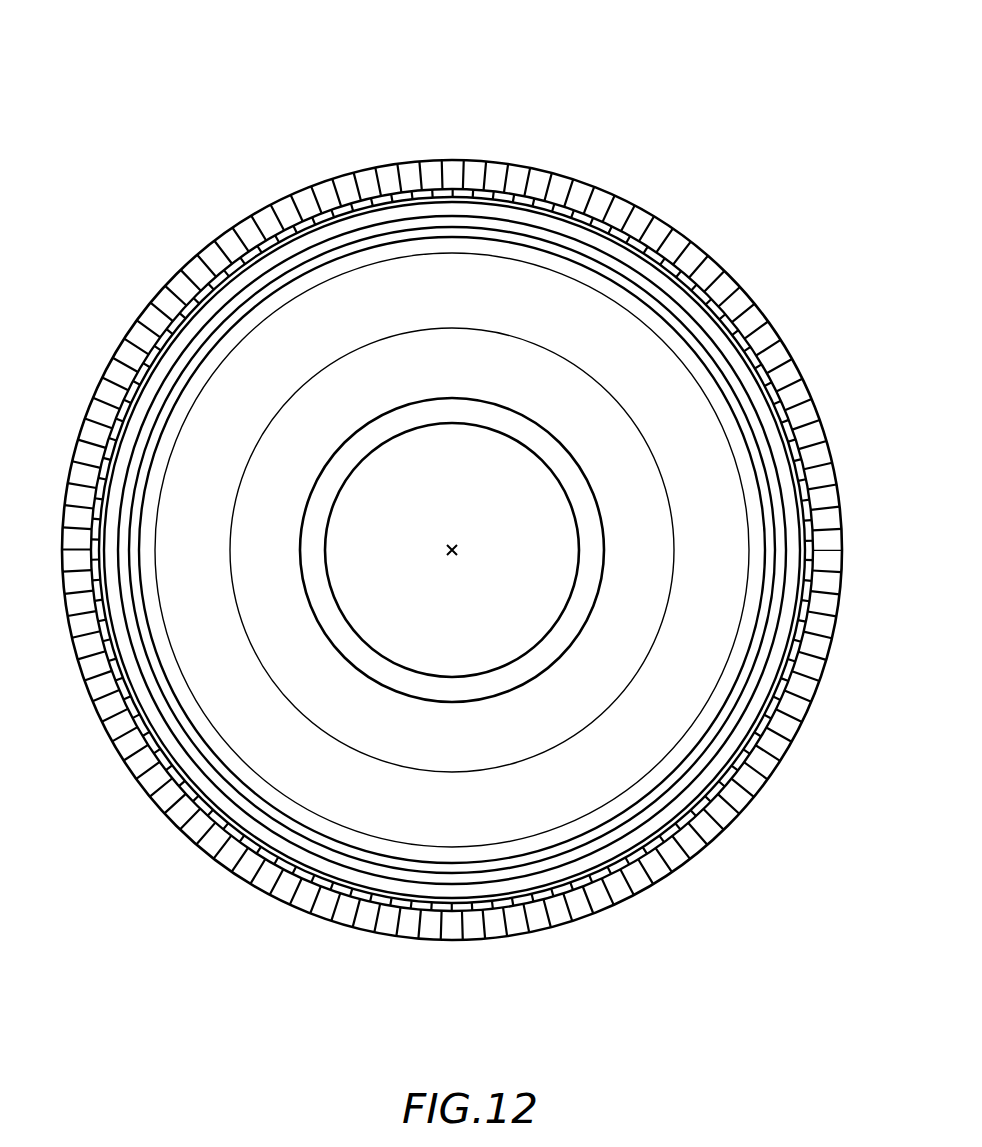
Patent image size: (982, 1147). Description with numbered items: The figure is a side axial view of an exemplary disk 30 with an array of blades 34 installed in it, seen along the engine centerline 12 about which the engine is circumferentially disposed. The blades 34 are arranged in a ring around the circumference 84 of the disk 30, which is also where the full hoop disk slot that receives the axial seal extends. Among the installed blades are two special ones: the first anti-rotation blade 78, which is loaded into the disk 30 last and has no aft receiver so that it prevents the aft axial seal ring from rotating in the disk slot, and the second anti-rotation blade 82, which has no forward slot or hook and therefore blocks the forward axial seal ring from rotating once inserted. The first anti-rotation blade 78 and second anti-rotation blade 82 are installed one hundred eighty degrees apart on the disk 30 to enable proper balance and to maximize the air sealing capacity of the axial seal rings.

The engine centerline 12 is at (450, 560).
The disk 30 is at (217, 546).
The blades 34 is at (152, 309).
The first anti-rotation blade 78 is at (498, 173).
The second anti-rotation blade 82 is at (423, 927).
The circumference 84 is at (464, 543).